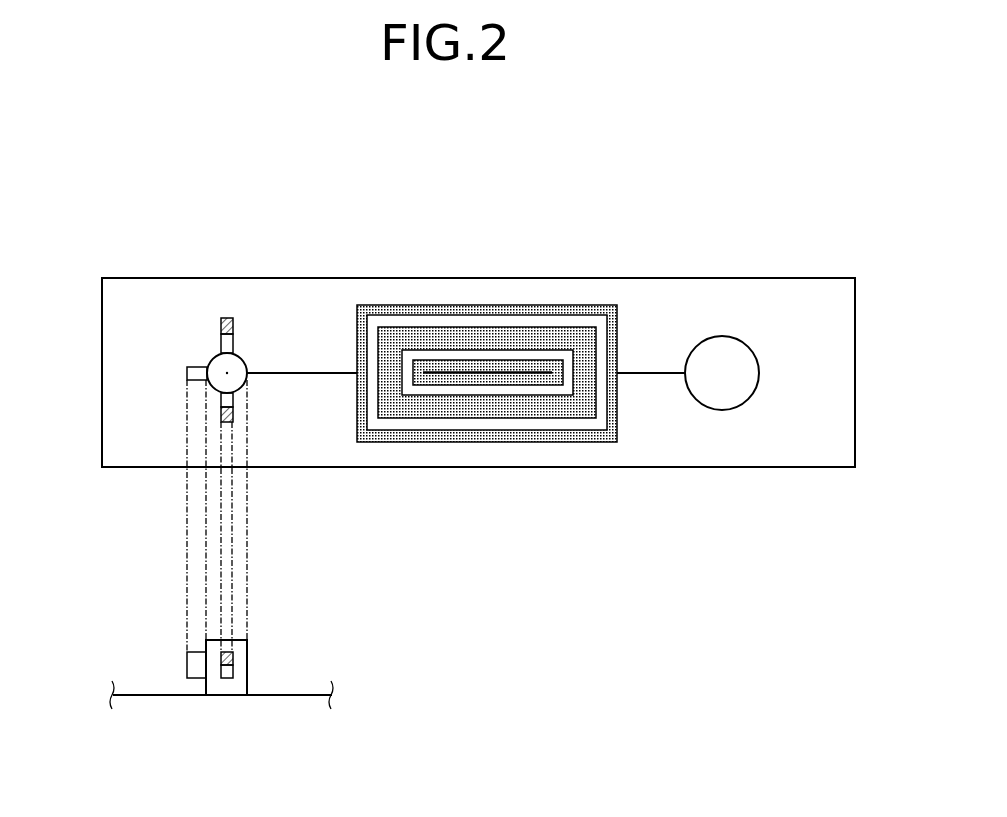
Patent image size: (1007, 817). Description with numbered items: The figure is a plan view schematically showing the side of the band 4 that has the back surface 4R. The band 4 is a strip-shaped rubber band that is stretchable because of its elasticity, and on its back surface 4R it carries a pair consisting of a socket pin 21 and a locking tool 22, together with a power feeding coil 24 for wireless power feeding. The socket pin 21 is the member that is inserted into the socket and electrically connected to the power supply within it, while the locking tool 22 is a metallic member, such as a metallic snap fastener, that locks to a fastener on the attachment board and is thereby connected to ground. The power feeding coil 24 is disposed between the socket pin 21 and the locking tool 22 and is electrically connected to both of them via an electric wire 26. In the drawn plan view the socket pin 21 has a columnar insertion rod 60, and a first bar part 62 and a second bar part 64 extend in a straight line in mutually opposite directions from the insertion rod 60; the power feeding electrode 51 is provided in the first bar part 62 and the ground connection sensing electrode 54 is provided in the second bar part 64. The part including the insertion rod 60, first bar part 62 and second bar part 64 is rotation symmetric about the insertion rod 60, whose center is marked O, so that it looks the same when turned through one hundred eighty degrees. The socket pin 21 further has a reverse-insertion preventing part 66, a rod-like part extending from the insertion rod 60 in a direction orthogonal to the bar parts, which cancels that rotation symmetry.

The band 4 is at (471, 278).
The back surface 4R is at (148, 379).
The socket pin 21 is at (231, 487).
The locking tool 22 is at (722, 336).
The power feeding coil 24 is at (496, 442).
The electric wire 26 is at (313, 372).
The power feeding electrode 51 is at (233, 325).
The ground connection sensing electrode 54 is at (233, 415).
The insertion rod 60 is at (212, 390).
The first bar part 62 is at (233, 342).
The second bar part 64 is at (233, 400).
The reverse-insertion preventing part 66 is at (188, 367).
The rotation axis O is at (222, 374).